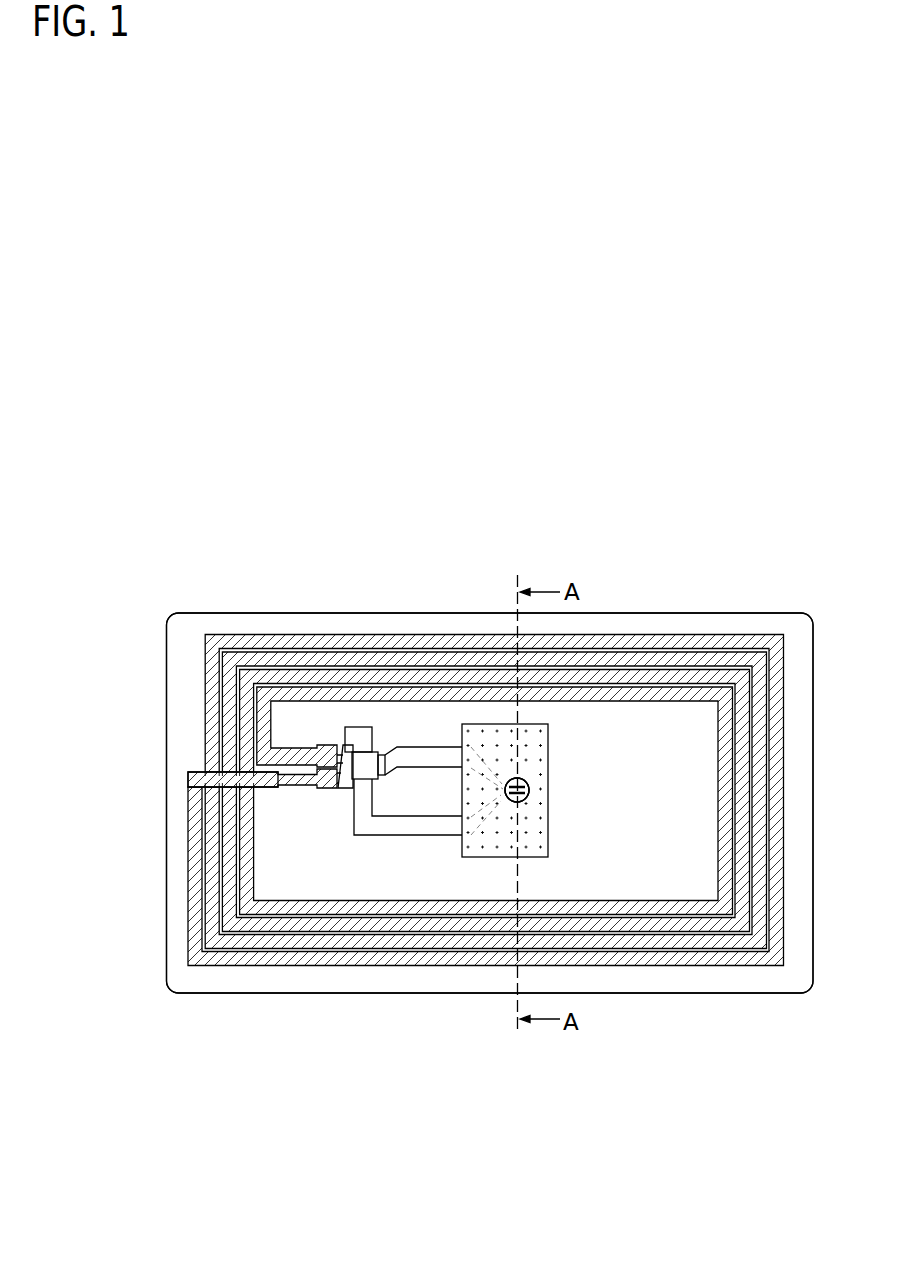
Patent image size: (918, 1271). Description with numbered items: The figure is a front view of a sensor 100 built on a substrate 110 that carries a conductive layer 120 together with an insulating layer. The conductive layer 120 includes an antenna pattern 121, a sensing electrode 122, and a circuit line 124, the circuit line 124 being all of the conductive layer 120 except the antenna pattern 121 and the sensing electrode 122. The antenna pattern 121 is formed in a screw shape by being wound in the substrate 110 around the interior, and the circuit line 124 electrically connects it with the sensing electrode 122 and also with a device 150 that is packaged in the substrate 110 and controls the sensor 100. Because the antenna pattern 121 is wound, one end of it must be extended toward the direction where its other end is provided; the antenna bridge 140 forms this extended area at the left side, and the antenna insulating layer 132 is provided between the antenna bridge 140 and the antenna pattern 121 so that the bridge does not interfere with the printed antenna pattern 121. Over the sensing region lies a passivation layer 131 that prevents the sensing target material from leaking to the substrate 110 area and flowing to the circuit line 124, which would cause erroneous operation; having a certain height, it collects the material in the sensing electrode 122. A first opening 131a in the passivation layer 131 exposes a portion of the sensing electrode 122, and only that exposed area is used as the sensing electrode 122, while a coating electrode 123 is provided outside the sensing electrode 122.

The sensor 100 is at (215, 465).
The substrate 110 is at (750, 612).
The conductive layer 120 is at (486, 869).
The antenna pattern 121 is at (323, 966).
The sensing electrode 122 is at (515, 803).
The coating electrode 123 is at (469, 915).
The circuit line 124 is at (382, 836).
The passivation layer 131 is at (483, 727).
The first opening 131a is at (531, 788).
The antenna insulating layer 132 is at (205, 771).
The antenna bridge 140 is at (260, 788).
The device 150 is at (364, 762).